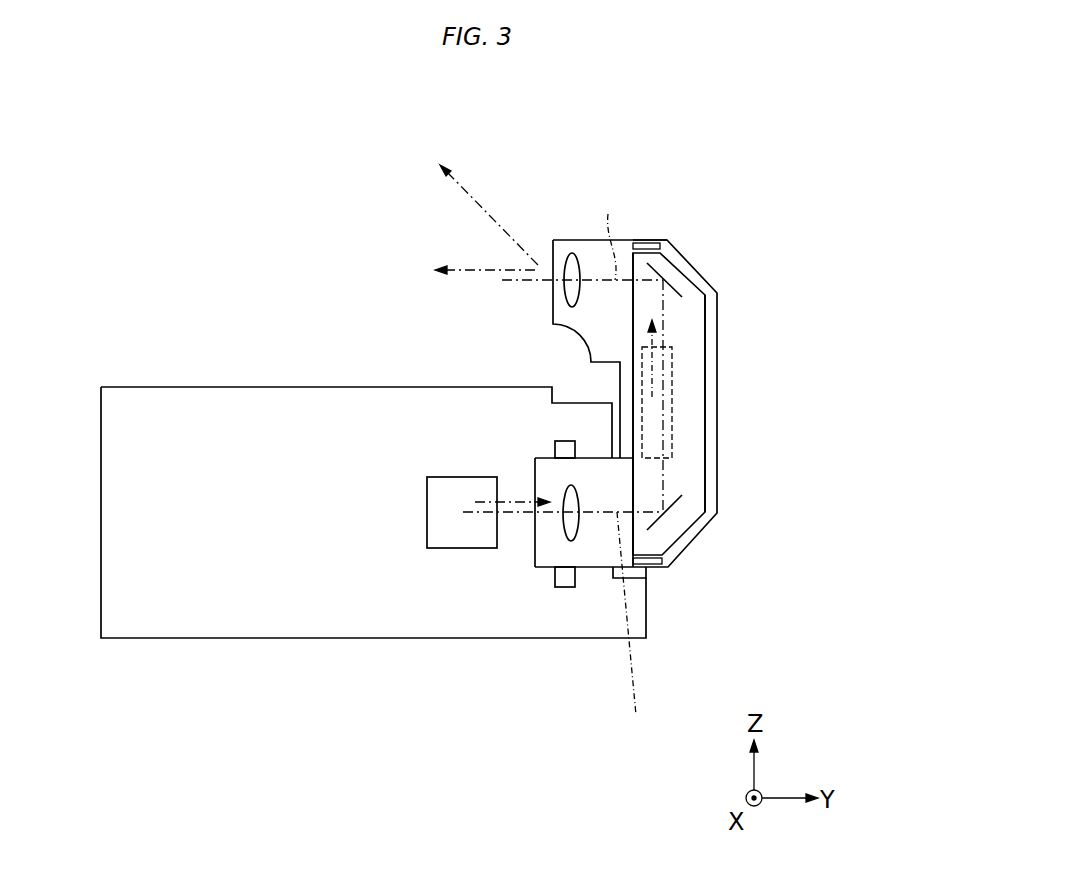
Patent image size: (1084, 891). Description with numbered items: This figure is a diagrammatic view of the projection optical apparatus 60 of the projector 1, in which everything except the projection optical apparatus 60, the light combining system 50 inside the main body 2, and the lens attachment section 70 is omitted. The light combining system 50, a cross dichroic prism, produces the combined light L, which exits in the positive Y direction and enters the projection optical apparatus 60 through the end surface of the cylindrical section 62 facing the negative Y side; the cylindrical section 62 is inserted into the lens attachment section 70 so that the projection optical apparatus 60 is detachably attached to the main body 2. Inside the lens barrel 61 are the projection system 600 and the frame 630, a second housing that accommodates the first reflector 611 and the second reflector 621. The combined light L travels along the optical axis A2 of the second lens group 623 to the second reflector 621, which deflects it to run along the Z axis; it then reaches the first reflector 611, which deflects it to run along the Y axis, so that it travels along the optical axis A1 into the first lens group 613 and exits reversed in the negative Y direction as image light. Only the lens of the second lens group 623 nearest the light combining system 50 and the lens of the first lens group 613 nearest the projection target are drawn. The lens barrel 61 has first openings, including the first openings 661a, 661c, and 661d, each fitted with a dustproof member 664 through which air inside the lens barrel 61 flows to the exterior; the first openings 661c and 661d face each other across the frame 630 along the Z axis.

The projector 1 is at (780, 148).
The main body 2 is at (233, 386).
The light combining system 50 is at (448, 548).
The projection optical apparatus 60 is at (835, 303).
The lens barrel 61 is at (717, 292).
The cylindrical section 62 is at (545, 567).
The lens attachment section 70 is at (563, 440).
The projection system 600 is at (690, 420).
The first reflector 611 is at (664, 273).
The first lens group 613 is at (563, 263).
The second reflector 621 is at (675, 512).
The second lens group 623 is at (577, 527).
The frame 630 is at (705, 442).
The first opening 661a is at (661, 340).
The first opening 661c is at (656, 243).
The first opening 661d is at (650, 578).
The dustproof member 664 is at (635, 241).
The optical axis of the first lens group A1 is at (612, 235).
The optical axis of the second lens group A2 is at (636, 629).
The combined light L is at (518, 500).